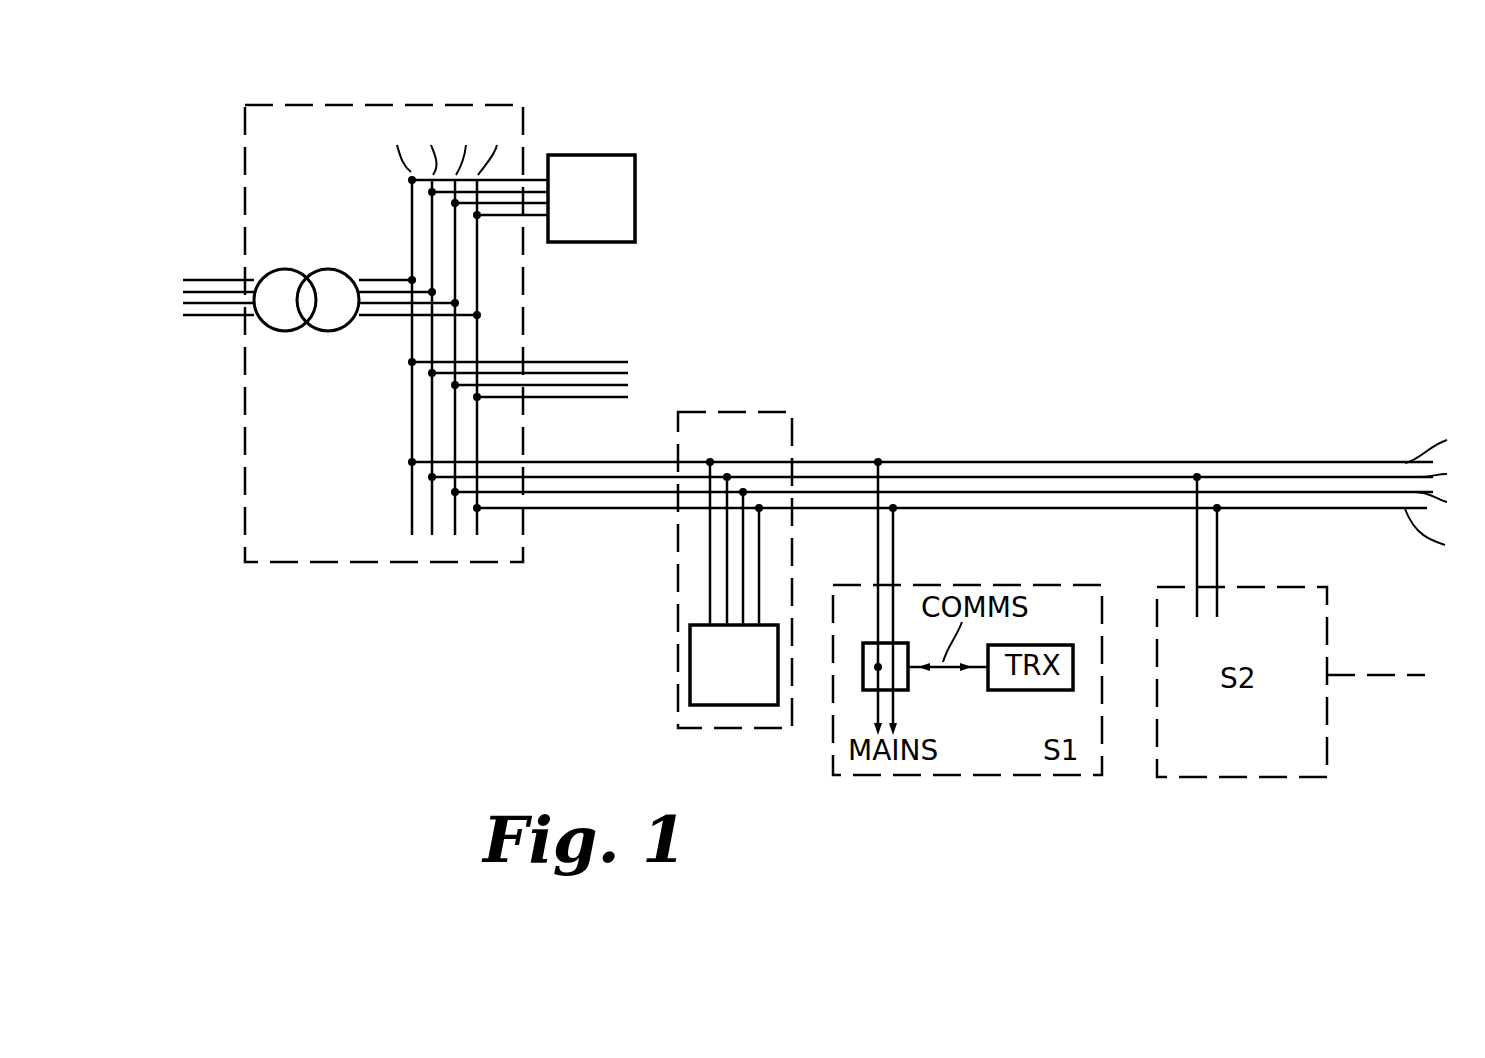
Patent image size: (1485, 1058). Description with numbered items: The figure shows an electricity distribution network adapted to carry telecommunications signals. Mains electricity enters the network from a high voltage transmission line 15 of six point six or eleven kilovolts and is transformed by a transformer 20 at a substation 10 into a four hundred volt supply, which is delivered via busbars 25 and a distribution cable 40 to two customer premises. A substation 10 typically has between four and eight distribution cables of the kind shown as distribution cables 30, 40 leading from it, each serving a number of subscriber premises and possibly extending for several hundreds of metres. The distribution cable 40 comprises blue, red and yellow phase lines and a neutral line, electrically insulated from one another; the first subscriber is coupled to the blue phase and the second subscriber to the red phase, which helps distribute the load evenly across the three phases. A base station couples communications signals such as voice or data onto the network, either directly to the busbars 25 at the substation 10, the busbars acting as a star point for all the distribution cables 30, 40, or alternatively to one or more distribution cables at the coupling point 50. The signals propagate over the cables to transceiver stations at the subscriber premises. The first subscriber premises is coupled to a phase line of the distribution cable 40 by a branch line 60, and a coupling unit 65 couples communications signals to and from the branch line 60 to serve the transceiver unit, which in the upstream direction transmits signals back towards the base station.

The substation 10 is at (297, 523).
The high voltage transmission line 15 is at (175, 300).
The transformer 20 is at (287, 313).
The busbars 25 is at (398, 497).
The distribution cable 30 is at (636, 338).
The distribution cable 40 is at (605, 529).
The coupling point 50 is at (724, 442).
The branch line 60 is at (897, 546).
The coupling unit 65 is at (863, 657).